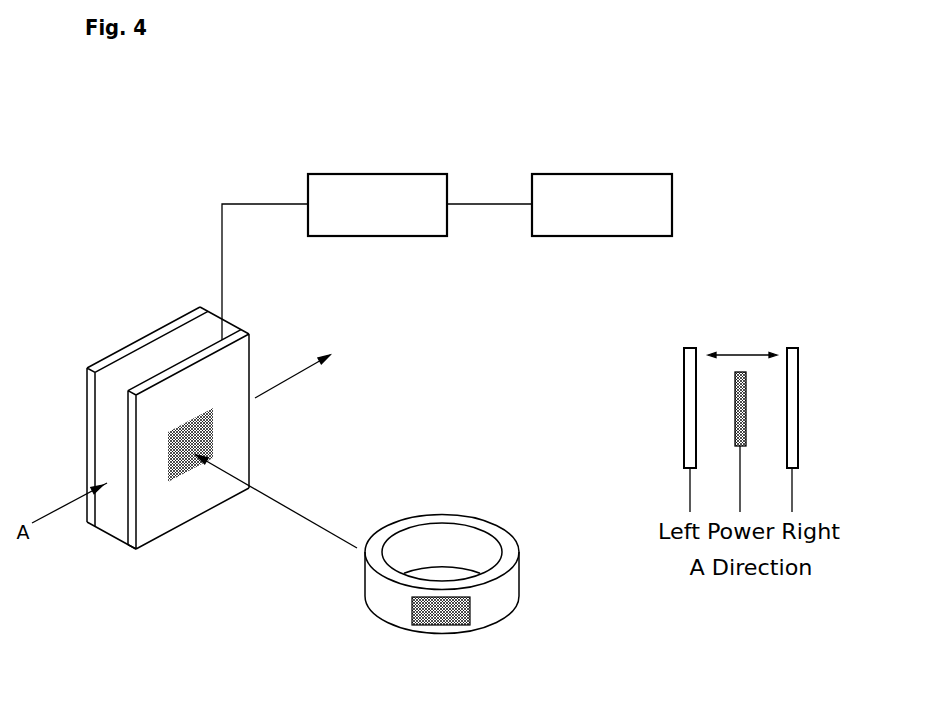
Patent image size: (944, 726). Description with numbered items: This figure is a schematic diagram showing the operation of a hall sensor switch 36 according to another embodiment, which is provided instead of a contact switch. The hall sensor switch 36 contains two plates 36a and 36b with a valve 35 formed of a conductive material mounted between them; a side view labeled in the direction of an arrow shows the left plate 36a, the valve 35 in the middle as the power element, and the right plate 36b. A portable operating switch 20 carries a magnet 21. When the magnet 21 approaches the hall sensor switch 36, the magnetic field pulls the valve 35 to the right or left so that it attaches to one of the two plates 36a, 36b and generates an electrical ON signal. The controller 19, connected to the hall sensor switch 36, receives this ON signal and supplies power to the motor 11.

The motor 11 is at (599, 174).
The controller 19 is at (378, 174).
The portable operating switch 20 is at (438, 517).
The magnet 21 is at (438, 626).
The valve 35 is at (188, 473).
The hall sensor switch 36 is at (124, 337).
The plate 36a is at (86, 522).
The plate 36b is at (130, 548).